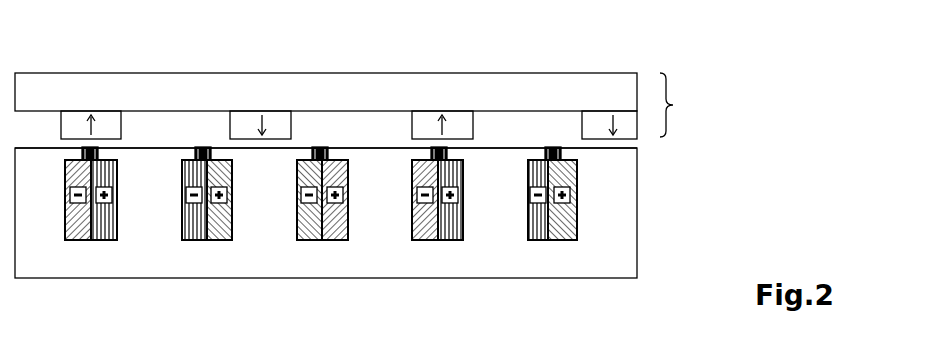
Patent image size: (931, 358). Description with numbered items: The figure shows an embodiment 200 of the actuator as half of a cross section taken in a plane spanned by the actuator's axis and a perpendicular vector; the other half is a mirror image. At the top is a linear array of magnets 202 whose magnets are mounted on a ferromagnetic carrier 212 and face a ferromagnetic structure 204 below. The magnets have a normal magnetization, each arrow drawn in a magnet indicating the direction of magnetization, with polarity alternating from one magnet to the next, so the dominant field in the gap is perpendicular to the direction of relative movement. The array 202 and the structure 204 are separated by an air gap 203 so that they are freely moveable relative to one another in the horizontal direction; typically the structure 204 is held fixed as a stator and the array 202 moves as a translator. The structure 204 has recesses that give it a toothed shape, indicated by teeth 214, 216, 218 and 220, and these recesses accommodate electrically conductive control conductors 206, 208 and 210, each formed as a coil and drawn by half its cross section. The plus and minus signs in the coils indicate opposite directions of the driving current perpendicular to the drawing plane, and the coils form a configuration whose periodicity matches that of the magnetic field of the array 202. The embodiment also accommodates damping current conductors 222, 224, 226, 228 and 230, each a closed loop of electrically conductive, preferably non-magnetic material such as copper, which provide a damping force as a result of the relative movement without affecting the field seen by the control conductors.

The embodiment of the actuator 200 is at (613, 332).
The linear array of magnets 202 is at (688, 105).
The air gap 203 is at (622, 143).
The ferromagnetic structure 204 is at (625, 207).
The control conductor 206 is at (190, 177).
The control conductor 208 is at (303, 177).
The control conductor 210 is at (415, 177).
The ferromagnetic carrier 212 is at (70, 85).
The tooth 214 is at (145, 163).
The tooth 216 is at (280, 163).
The tooth 218 is at (365, 163).
The tooth 220 is at (490, 163).
The damping current conductor 222 is at (94, 147).
The damping current conductor 224 is at (205, 147).
The damping current conductor 226 is at (320, 147).
The damping current conductor 228 is at (442, 147).
The damping current conductor 230 is at (556, 147).